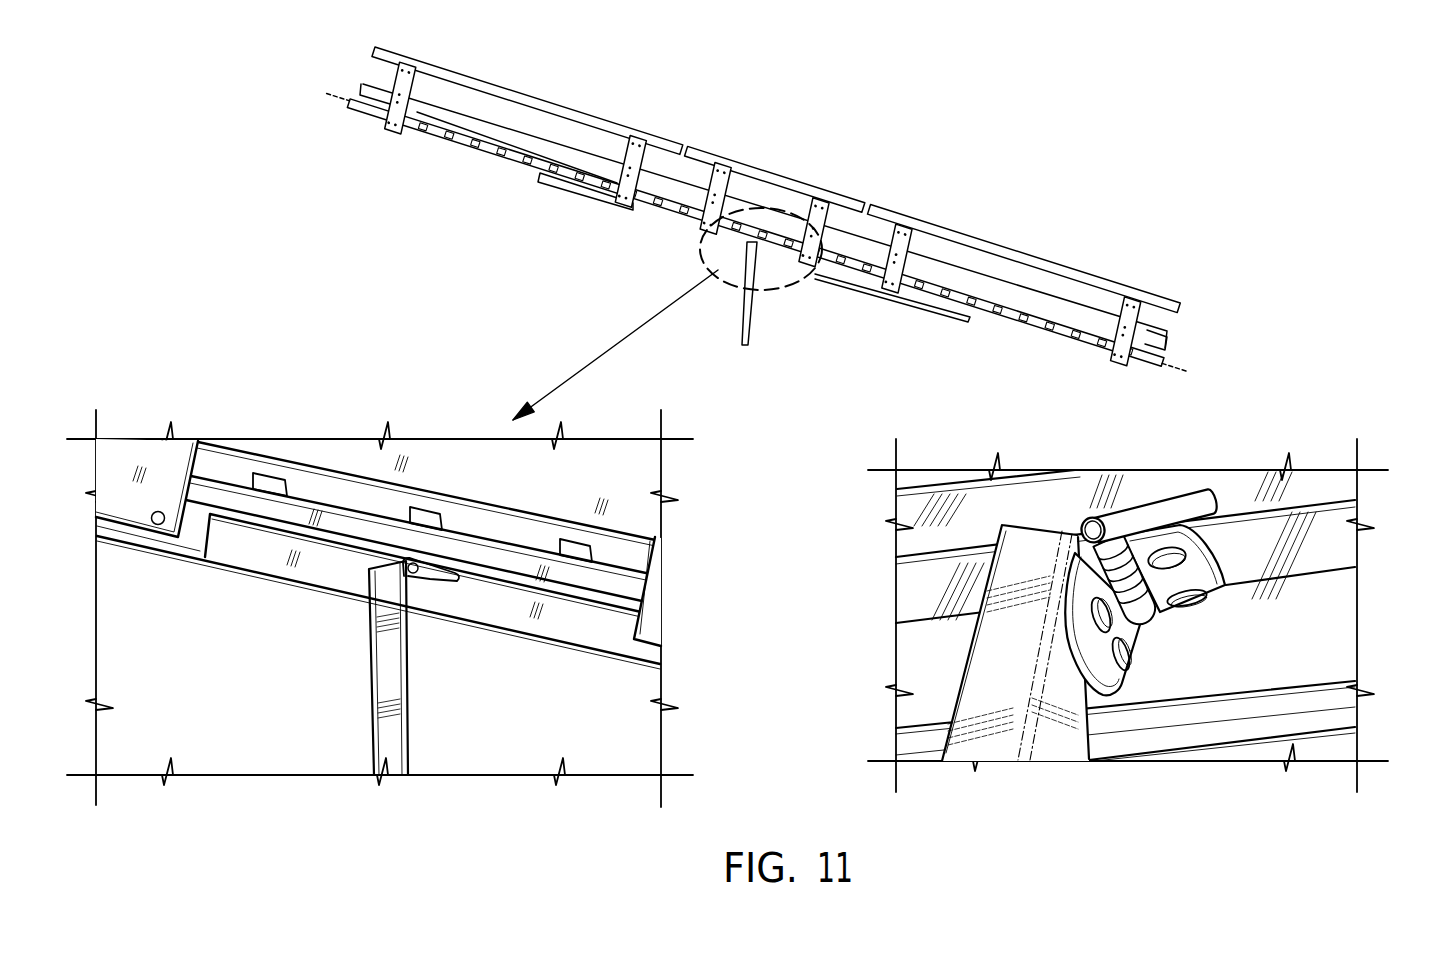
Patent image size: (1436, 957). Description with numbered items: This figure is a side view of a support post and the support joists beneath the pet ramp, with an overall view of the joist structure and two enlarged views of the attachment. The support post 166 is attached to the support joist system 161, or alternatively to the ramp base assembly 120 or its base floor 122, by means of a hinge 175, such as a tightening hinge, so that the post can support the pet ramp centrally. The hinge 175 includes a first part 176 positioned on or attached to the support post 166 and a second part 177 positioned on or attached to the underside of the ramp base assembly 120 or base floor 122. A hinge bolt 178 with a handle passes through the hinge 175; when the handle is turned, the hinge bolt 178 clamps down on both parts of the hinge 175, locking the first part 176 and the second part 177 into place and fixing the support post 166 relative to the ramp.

The ramp base assembly 120 is at (357, 109).
The base floor 122 is at (1137, 358).
The joist system 161 is at (196, 546).
The support post 166 is at (391, 663).
The hinge 175 is at (1137, 625).
The first part 176 is at (1103, 657).
The second part 177 is at (1215, 603).
The hinge bolt 178 is at (1091, 531).